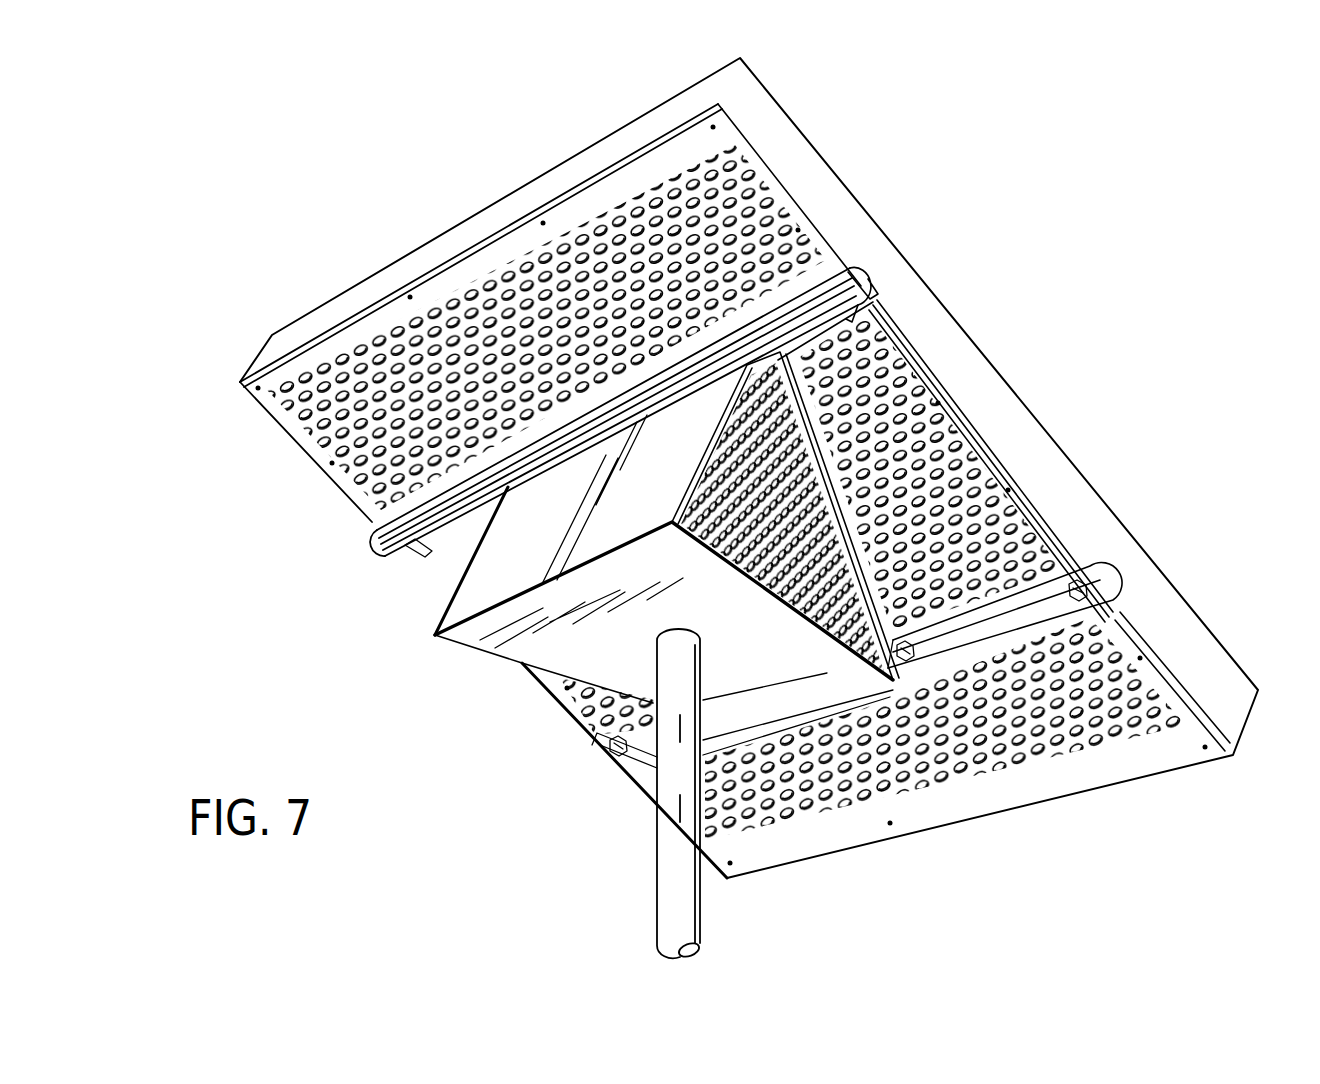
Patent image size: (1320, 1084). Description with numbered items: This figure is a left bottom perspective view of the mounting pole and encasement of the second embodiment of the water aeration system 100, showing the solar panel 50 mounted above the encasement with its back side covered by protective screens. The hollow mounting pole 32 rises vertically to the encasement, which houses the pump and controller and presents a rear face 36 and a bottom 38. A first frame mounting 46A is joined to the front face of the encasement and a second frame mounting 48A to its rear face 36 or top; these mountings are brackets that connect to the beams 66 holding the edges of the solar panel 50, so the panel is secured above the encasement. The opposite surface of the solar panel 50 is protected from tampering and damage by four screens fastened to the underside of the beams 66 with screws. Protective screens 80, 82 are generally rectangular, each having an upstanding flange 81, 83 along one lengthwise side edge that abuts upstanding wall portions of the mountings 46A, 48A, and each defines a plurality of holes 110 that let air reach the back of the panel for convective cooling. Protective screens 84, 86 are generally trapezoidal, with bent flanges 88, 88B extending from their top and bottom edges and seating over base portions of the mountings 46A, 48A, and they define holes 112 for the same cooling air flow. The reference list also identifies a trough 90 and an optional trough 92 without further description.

The water aeration system 100 is at (273, 260).
The hollow mounting pole 32 is at (672, 901).
The rear face of encasement 36 is at (450, 618).
The bottom of encasement 38 is at (520, 662).
The frame mounting for solar panel 46A is at (1025, 640).
The frame mounting for solar panel 48A is at (797, 340).
The solar panel 50 is at (527, 194).
The beams holding solar panel 66 is at (388, 280).
The protective screen 80 is at (627, 180).
The flange 81 is at (372, 516).
The protective screen 82 is at (1150, 760).
The flange 83 is at (1135, 622).
The protective screen 84 is at (985, 465).
The protective screen 86 is at (580, 712).
The bent flange 88 is at (1035, 605).
The bent flange 88B is at (855, 340).
The trough 90 is at (870, 700).
The optional trough 92 is at (900, 385).
The holes 110 is at (320, 442).
The holes 112 is at (917, 430).